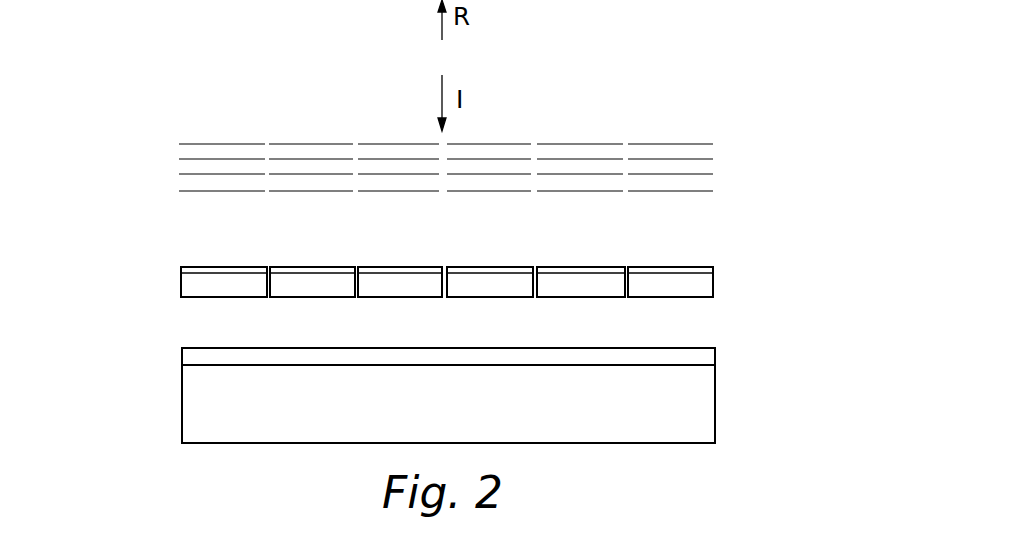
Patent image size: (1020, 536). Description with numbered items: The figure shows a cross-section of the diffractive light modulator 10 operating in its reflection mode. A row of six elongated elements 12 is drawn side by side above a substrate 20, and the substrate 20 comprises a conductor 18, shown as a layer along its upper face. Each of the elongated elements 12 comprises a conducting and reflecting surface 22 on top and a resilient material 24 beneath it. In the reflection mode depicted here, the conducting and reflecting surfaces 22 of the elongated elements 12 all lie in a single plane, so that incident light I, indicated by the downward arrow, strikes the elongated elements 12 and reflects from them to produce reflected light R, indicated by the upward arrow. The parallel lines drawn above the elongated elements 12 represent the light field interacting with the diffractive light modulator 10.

The diffractive light modulator 10 is at (674, 129).
The elongated elements 12 is at (181, 292).
The conductor 18 is at (715, 356).
The substrate 20 is at (451, 414).
The conducting and reflecting surface 22 is at (313, 267).
The resilient material 24 is at (449, 267).